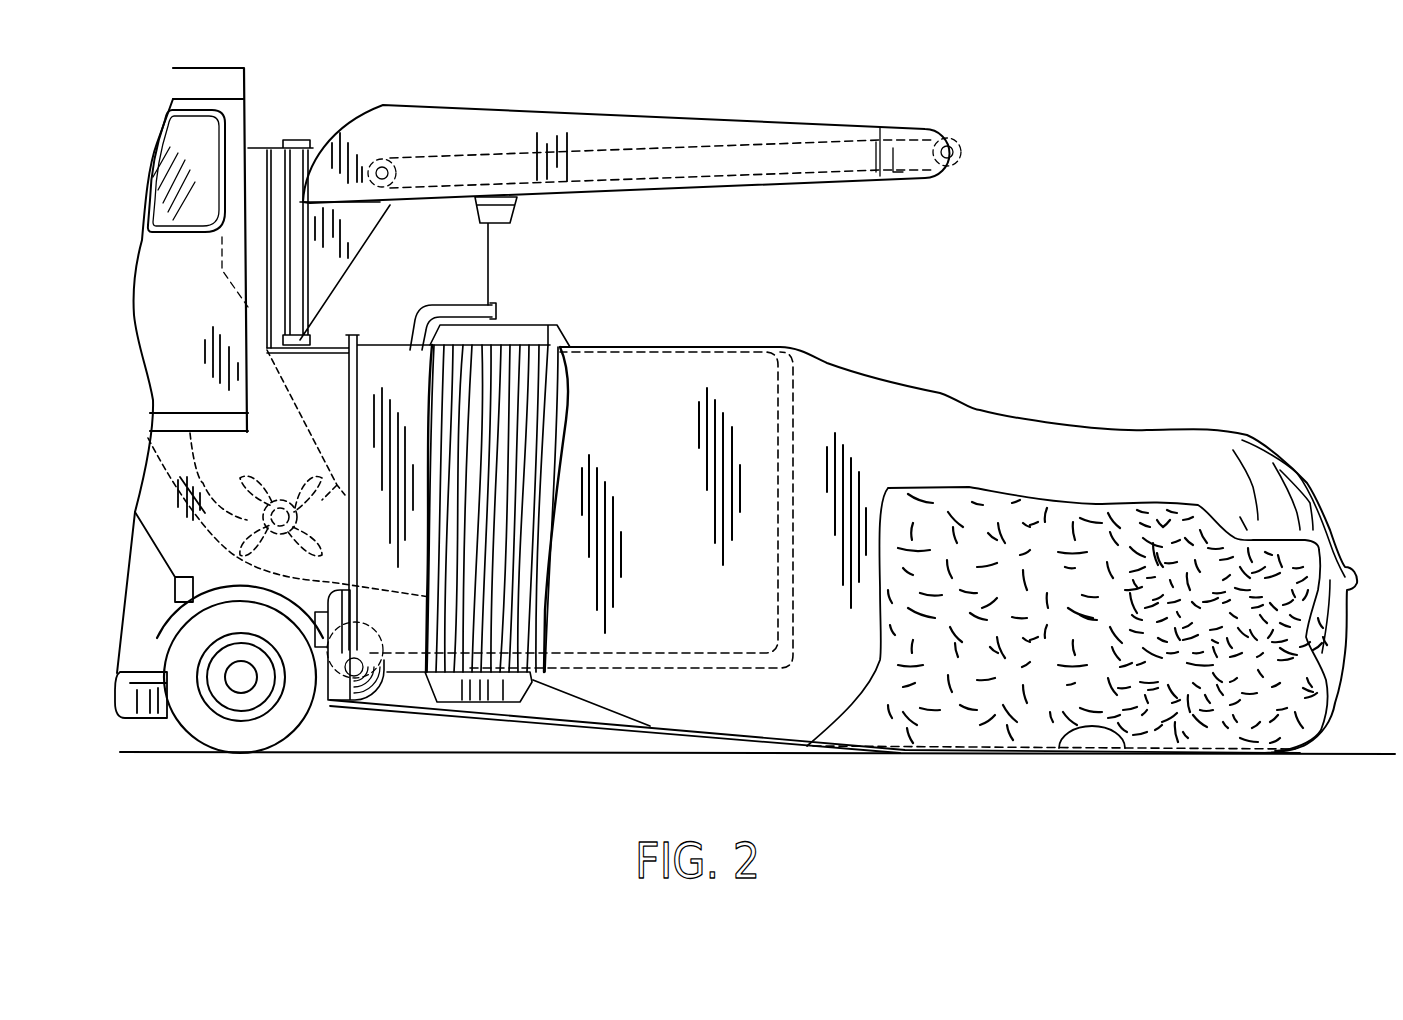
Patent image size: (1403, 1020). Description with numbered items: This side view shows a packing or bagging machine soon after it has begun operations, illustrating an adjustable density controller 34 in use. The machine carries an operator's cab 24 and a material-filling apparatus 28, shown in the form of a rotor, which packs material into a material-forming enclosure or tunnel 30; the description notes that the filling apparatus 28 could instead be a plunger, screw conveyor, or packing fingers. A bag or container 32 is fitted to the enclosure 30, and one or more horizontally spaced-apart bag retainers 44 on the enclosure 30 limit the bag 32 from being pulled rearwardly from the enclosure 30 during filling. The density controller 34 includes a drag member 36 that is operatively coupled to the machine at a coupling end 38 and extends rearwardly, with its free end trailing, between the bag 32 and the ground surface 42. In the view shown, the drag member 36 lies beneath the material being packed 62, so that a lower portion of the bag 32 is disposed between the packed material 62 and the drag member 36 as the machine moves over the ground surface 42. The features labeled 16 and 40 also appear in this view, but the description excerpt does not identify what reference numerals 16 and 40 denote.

The bagging apparatus 16 is at (540, 283).
The operator's cab 24 is at (232, 112).
The material-filling apparatus 28 is at (188, 432).
The material-forming enclosure 30 is at (398, 373).
The bag 32 is at (530, 423).
The density controller 34 is at (424, 728).
The drag member 36 is at (1122, 748).
The coupling end 38 is at (326, 712).
The bag 40 is at (1218, 738).
The ground surface 42 is at (1338, 756).
The bag retainers 44 is at (498, 692).
The material being packed 62 is at (1283, 558).